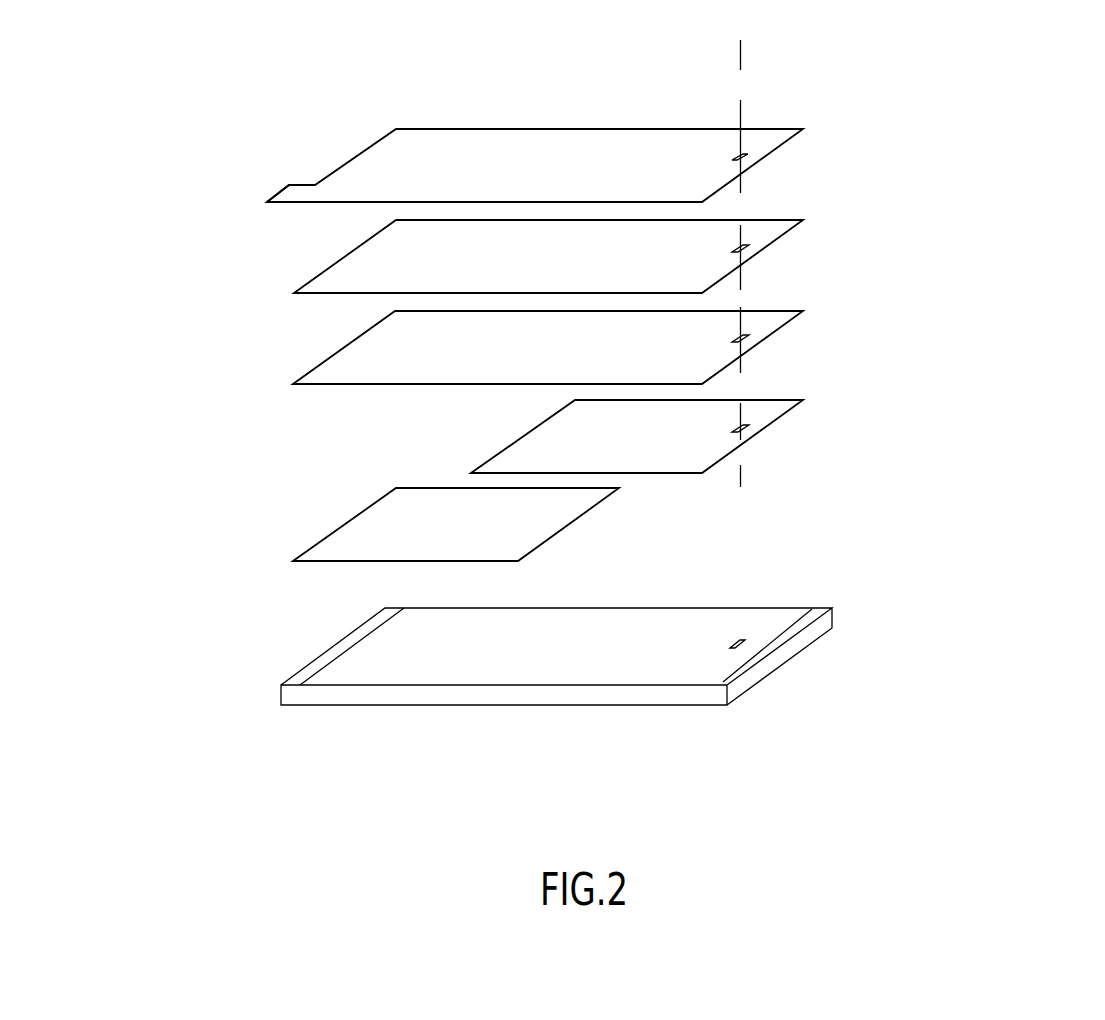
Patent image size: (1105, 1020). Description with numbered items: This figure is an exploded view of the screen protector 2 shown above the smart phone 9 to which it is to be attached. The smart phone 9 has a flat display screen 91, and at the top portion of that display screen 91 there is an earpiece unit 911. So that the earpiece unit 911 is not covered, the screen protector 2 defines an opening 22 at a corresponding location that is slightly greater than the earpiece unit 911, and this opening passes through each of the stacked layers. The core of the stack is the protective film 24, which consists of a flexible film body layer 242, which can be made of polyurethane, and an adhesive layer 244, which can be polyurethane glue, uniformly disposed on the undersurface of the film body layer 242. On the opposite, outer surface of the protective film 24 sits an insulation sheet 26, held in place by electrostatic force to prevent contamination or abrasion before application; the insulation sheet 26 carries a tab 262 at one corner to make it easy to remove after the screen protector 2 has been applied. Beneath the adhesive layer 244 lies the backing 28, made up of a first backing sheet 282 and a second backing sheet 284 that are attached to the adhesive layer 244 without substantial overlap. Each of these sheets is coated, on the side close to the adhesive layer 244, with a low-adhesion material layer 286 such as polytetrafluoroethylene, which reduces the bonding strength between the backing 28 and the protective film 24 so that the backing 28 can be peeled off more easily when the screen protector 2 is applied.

The screen protector 2 is at (1005, 65).
The opening 22 is at (750, 155).
The insulation sheet 26 is at (752, 168).
The tab 262 is at (289, 185).
The protective film 24 is at (926, 273).
The film body layer 242 is at (757, 258).
The adhesive layer 244 is at (757, 345).
The backing 28 is at (932, 458).
The first backing sheet 282 is at (757, 439).
The second backing sheet 284 is at (572, 527).
The low-adhesion material layer 286 is at (608, 429).
The smart phone 9 is at (281, 685).
The display screen 91 is at (350, 645).
The earpiece unit 911 is at (730, 648).